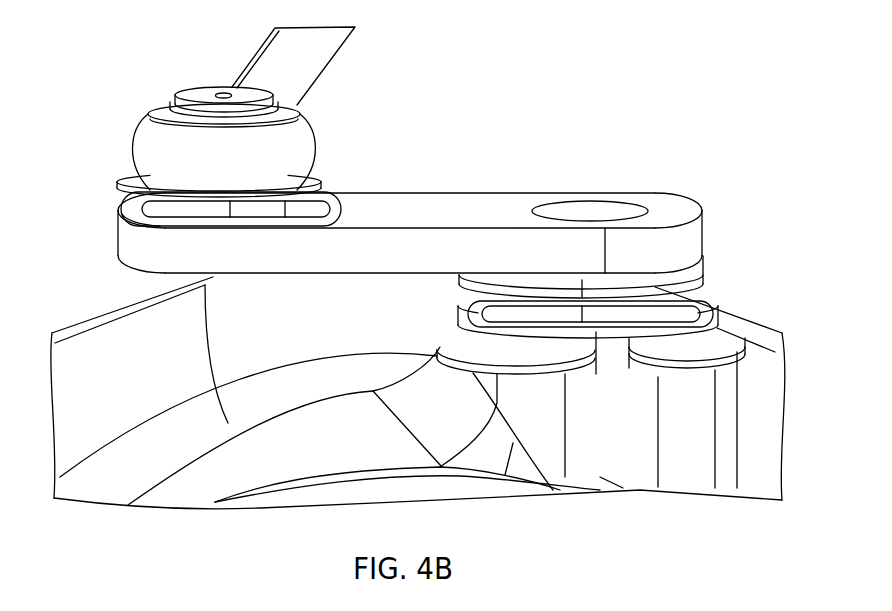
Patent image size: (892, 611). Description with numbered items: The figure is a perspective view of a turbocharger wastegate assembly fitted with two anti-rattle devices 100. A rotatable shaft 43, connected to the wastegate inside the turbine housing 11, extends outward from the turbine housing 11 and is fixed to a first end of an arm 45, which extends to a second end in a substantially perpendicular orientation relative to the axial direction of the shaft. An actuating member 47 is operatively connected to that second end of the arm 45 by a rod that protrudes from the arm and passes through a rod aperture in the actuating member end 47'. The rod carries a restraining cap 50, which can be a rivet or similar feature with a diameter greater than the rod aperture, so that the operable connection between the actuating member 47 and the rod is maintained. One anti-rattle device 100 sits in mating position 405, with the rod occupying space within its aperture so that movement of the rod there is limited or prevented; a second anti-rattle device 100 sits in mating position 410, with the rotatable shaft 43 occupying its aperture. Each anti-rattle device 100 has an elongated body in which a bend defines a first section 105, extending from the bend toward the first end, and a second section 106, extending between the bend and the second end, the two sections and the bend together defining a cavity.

The turbine housing 11 is at (710, 335).
The rotatable shaft 43 is at (600, 207).
The arm 45 is at (410, 213).
The actuating member 47 is at (303, 66).
The actuating member end 47' is at (202, 116).
The restraining cap 50 is at (203, 95).
The anti-rattle device 100 is at (370, 246).
The first section 105 is at (130, 178).
The second section 106 is at (133, 207).
The mating position 405 is at (354, 172).
The mating position 410 is at (736, 275).